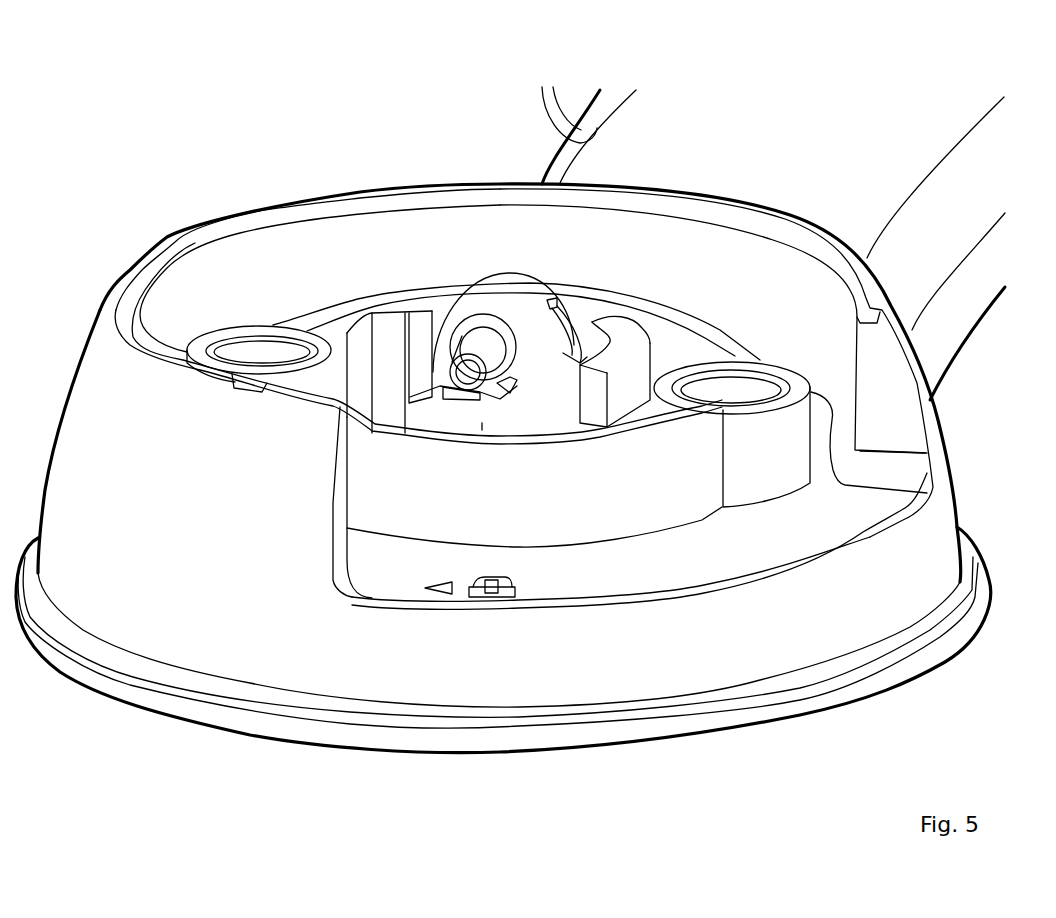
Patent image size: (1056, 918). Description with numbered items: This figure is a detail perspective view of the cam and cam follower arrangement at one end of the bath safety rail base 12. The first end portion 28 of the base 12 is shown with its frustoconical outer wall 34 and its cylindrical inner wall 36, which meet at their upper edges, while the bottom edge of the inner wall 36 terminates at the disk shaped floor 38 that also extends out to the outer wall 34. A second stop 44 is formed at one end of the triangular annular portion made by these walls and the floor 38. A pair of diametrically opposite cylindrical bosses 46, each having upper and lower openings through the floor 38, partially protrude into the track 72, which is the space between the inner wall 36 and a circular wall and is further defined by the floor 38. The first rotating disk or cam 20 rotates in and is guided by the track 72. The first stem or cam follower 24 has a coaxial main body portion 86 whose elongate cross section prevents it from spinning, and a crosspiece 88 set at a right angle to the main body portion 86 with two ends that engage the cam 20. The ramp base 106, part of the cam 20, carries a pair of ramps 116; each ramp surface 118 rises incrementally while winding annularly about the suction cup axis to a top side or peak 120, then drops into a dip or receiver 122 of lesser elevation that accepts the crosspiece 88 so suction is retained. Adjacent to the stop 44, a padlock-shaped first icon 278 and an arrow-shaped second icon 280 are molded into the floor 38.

The base 12 is at (540, 152).
The first rotating disk or cam 20 is at (363, 327).
The first stem or cam follower 24 is at (505, 300).
The first end portion 28 is at (123, 265).
The frustoconical outer wall 34 is at (192, 514).
The cylindrical inner wall 36 is at (285, 265).
The disk shaped floor 38 is at (699, 560).
The second end of triangular annular portion (second stop) 44 is at (350, 506).
The cylindrical boss 46 is at (776, 473).
The track 72 is at (820, 472).
The main body portion 86 is at (522, 307).
The crosspiece or crosswise portion 88 is at (480, 340).
The ramp base 106 is at (632, 413).
The ramp 116 is at (567, 337).
The ramp surface 118 is at (425, 400).
The top side or peak 120 is at (445, 397).
The dip or receiver 122 is at (492, 397).
The first icon 278 is at (519, 590).
The second icon 280 is at (435, 592).